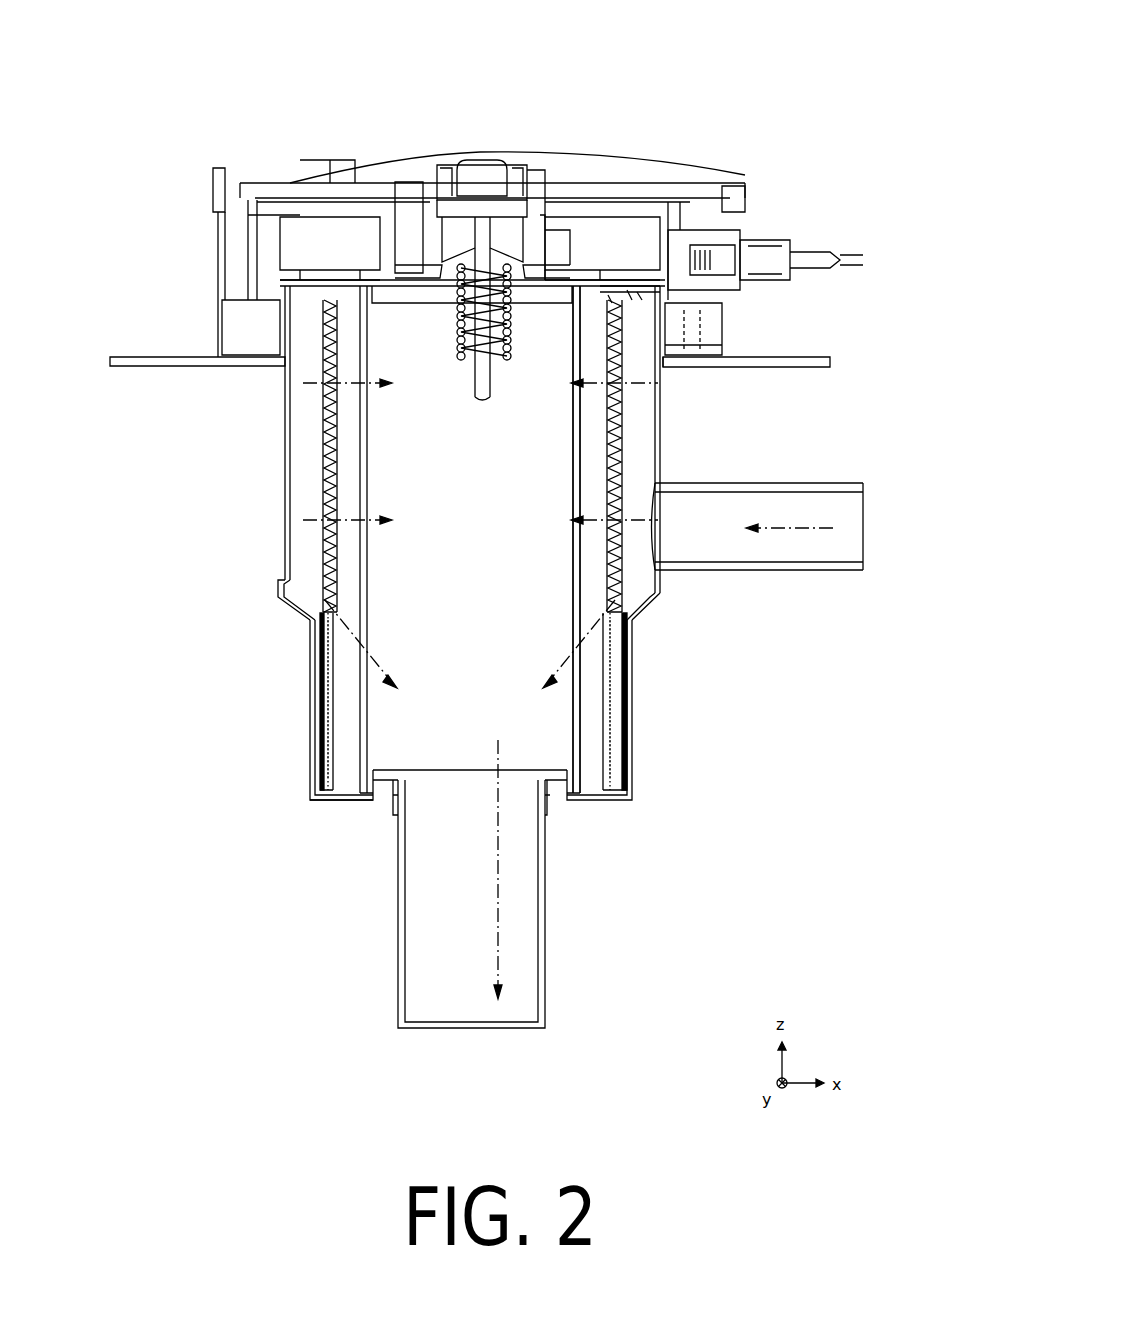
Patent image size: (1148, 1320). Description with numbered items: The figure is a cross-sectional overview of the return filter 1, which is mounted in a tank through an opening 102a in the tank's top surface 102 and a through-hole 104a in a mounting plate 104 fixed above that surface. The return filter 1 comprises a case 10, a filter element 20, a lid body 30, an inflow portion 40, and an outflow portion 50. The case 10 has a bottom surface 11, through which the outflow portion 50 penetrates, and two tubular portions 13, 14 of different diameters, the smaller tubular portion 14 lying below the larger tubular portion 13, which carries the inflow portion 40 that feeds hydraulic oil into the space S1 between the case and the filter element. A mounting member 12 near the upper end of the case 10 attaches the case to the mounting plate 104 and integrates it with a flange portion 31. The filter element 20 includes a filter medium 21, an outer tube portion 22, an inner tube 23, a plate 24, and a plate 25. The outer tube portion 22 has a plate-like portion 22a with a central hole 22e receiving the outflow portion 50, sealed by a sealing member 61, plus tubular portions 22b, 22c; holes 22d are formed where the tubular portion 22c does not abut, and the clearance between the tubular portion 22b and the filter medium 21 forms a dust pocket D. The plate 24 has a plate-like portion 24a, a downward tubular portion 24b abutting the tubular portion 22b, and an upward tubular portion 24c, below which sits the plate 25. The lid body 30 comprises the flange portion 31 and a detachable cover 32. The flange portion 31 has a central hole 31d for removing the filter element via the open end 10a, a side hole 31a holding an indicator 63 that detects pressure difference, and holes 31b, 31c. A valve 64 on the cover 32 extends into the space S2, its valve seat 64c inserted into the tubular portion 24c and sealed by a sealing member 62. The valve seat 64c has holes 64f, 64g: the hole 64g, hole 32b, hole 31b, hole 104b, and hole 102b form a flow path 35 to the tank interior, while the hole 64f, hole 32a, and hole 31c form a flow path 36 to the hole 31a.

The return filter 1 is at (814, 58).
The case 10 is at (222, 447).
The open end 10a is at (262, 325).
The bottom surface 11 is at (330, 805).
The mounting member 12 is at (292, 312).
The tubular portion 13 is at (285, 532).
The tubular portion 14 is at (312, 642).
The filter element 20 is at (818, 600).
The filter medium 21 is at (600, 686).
The outer tube portion 22 is at (727, 700).
The plate-like portion 22a is at (628, 792).
The tubular portion 22b is at (628, 724).
The tubular portion 22c is at (620, 752).
The holes 22d is at (606, 572).
The hole 22e is at (555, 812).
The inner tube 23 is at (630, 656).
The plate 24 is at (770, 595).
The plate-like portion 24a is at (637, 292).
The tubular portion 24b is at (627, 290).
The tubular portion 24c is at (608, 295).
The plate 25 is at (393, 286).
The lid body 30 is at (636, 32).
The flange portion 31 is at (758, 192).
The hole 31a is at (770, 283).
The hole 31b is at (196, 170).
The hole 31c is at (705, 220).
The hole 31d is at (700, 245).
The cover 32 is at (535, 155).
The hole 32a is at (598, 192).
The hole 32b is at (345, 167).
The flow path 35 is at (453, 90).
The flow path 36 is at (555, 180).
The inflow portion 40 is at (820, 484).
The outflow portion 50 is at (540, 975).
The sealing member 61 is at (393, 800).
The sealing member 62 is at (568, 246).
The indicator 63 is at (790, 257).
The valve 64 is at (478, 165).
The valve seat 64c is at (433, 290).
The hole 64f is at (560, 167).
The hole 64g is at (410, 167).
The top surface 102 is at (782, 364).
The opening 102a is at (665, 372).
The hole 102b is at (292, 167).
The mounting plate 104 is at (705, 325).
The through-hole 104a is at (665, 353).
The hole 104b is at (248, 170).
The space S1 is at (690, 405).
The space S2 is at (468, 745).
The dust pocket D is at (320, 716).